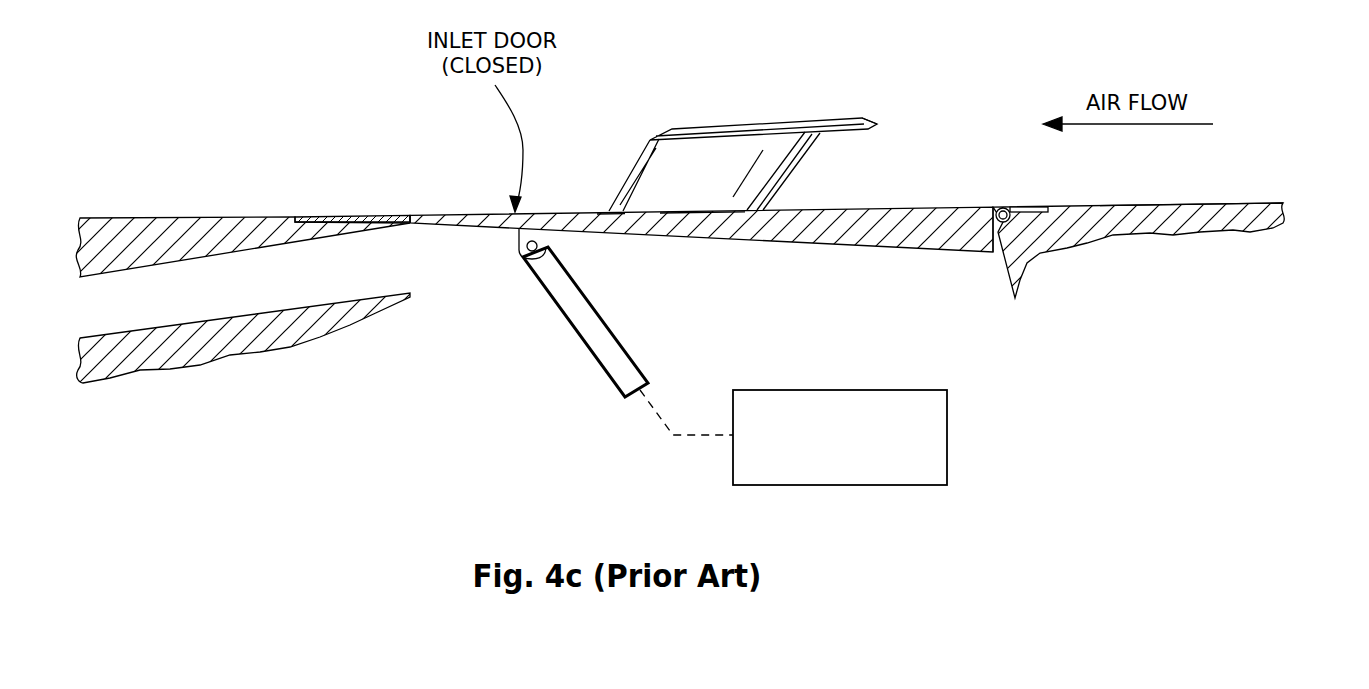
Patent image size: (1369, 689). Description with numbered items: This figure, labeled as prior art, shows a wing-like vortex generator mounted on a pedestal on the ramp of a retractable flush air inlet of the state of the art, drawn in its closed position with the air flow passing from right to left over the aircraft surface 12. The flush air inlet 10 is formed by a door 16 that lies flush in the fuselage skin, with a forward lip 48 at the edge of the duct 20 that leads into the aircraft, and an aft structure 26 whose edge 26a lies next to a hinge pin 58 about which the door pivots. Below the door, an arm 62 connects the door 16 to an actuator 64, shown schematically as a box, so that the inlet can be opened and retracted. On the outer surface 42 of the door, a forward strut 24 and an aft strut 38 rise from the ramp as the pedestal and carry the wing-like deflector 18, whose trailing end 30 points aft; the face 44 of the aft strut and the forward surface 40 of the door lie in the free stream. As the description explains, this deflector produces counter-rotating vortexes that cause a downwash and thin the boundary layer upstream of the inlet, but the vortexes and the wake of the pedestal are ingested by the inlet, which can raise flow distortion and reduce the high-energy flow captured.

The inlet door assembly 10 is at (417, 214).
The aircraft skin 12 is at (1248, 198).
The door panel 16 is at (847, 234).
The scoop plate 18 is at (742, 123).
The inlet duct 20 is at (226, 295).
The forward strut 24 is at (648, 152).
The aft structure 26 is at (1137, 208).
The aft structure edge 26a is at (913, 207).
The plate trailing end 30 is at (863, 118).
The aft strut 38 is at (790, 188).
The door forward surface 40 is at (622, 184).
The door outer surface 42 is at (697, 180).
The strut face 44 is at (762, 143).
The lip seal 48 is at (352, 212).
The hinge pin 58 is at (1003, 207).
The actuator arm 62 is at (577, 335).
The actuator 64 is at (947, 440).